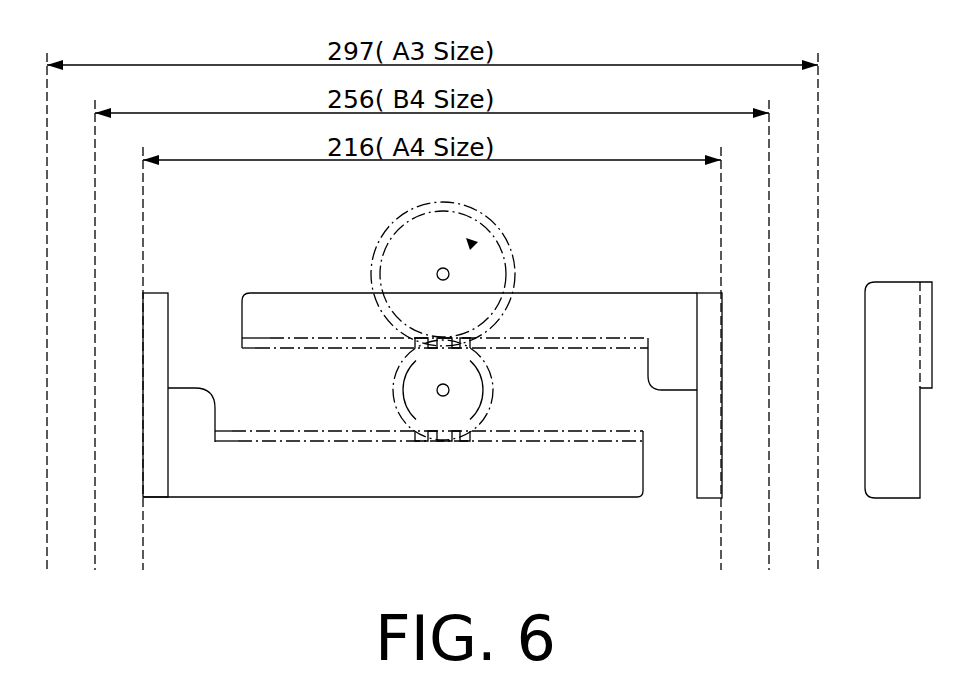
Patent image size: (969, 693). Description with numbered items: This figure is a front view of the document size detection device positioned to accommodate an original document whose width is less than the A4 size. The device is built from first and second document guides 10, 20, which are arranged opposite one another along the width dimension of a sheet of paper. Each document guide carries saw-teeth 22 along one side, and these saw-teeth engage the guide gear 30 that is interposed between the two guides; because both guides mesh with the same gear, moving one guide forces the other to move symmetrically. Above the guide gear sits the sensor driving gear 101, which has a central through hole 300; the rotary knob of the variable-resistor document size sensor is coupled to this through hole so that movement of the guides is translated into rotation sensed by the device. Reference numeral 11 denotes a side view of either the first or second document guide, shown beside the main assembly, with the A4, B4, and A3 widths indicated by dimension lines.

The first document guide 10 is at (302, 300).
The second document guide 20 is at (550, 497).
The saw-teeth 22 is at (415, 340).
The guide gear 30 is at (407, 395).
The sensor driving gear 101 is at (478, 230).
The central through hole 300 is at (449, 274).
The side view of document guide 11 is at (903, 283).